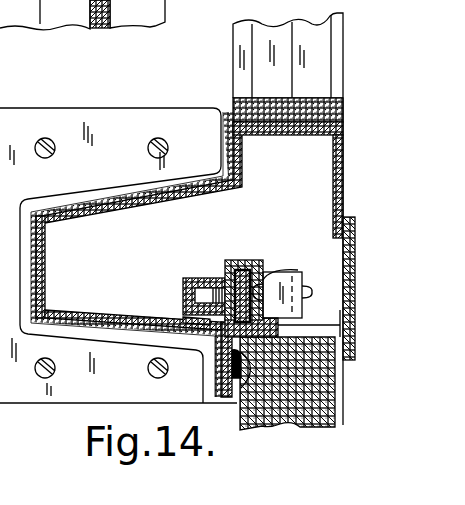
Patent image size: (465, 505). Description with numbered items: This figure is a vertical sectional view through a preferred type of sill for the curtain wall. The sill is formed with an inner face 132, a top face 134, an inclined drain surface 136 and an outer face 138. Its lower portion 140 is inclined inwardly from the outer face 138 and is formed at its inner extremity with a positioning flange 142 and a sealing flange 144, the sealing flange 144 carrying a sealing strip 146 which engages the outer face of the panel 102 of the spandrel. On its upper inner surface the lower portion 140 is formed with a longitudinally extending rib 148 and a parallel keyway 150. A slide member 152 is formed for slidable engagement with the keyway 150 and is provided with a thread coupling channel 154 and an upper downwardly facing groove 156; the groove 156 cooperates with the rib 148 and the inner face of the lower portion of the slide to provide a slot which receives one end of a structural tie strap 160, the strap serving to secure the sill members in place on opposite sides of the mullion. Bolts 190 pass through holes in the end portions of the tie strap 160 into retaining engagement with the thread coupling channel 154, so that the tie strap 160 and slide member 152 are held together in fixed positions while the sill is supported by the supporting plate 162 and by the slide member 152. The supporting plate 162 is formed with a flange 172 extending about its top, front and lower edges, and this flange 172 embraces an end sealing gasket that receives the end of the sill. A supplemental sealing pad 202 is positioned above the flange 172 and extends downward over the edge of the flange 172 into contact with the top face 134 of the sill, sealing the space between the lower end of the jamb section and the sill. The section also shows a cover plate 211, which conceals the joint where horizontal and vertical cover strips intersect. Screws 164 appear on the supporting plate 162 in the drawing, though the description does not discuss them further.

The panel 102 is at (305, 410).
The inner face 132 is at (336, 184).
The top face 134 is at (283, 130).
The inclined drain surface 136 is at (142, 200).
The outer face 138 is at (42, 264).
The lower portion 140 is at (129, 318).
The positioning flange 142 is at (270, 331).
The sealing flange 144 is at (232, 372).
The sealing strip 146 is at (240, 396).
The rib 148 is at (308, 298).
The keyway 150 is at (192, 332).
The slide member 152 is at (177, 299).
The thread coupling channel 154 is at (219, 280).
The downwardly facing groove 156 is at (243, 270).
The structural tie strap 160 is at (316, 272).
The supporting plate 162 is at (149, 119).
The screws 164 is at (150, 151).
The flange 172 is at (72, 195).
The bolts 190 is at (262, 292).
The supplemental sealing pad 202 is at (335, 107).
The cover plate 211 is at (356, 323).